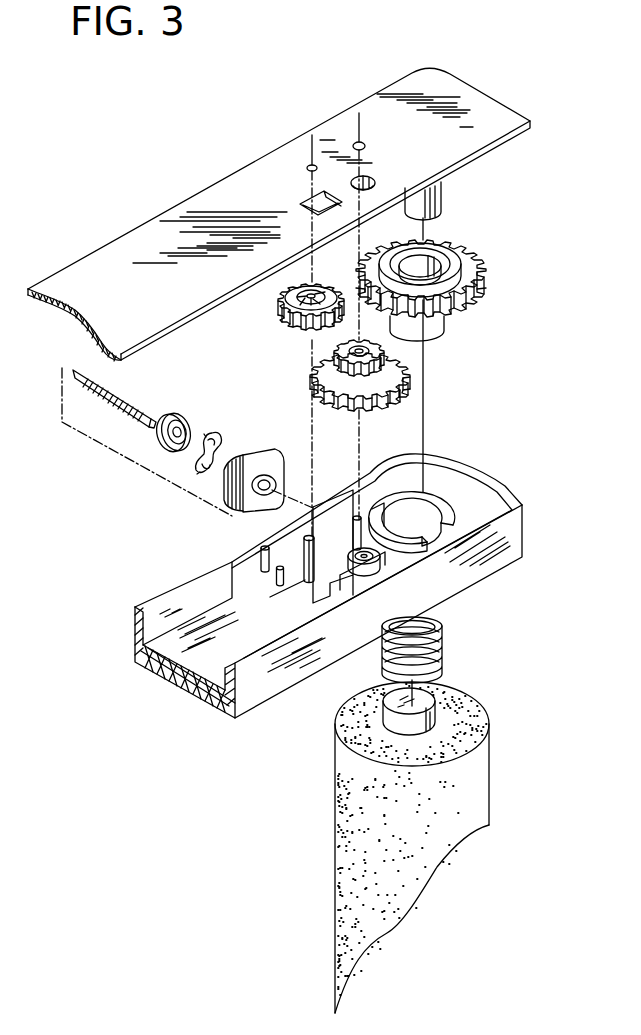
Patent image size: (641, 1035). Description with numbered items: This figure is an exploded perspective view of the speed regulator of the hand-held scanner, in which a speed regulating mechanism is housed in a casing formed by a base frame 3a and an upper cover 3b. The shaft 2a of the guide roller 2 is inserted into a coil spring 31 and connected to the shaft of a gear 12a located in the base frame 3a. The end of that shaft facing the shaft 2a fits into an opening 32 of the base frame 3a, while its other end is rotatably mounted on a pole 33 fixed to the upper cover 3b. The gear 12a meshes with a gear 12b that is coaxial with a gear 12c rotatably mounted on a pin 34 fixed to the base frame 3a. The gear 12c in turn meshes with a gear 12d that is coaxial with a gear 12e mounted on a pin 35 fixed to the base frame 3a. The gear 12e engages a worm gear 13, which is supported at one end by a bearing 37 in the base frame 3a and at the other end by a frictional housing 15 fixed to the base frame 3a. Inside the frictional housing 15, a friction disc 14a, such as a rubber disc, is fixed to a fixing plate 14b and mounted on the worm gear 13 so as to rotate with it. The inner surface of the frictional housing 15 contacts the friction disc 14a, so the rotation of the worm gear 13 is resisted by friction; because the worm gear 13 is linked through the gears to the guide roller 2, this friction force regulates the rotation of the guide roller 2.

The guide roller 2 is at (488, 763).
The shaft 2a is at (433, 700).
The base frame 3a is at (523, 527).
The upper cover 3b is at (500, 103).
The gear 12a is at (488, 284).
The gear 12b is at (386, 356).
The gear 12c is at (410, 385).
The gear 12d is at (293, 340).
The gear 12e is at (277, 307).
The worm gear 13 is at (100, 398).
The friction disc 14a is at (197, 465).
The fixing plate 14b is at (155, 440).
The frictional housing 15 is at (233, 493).
The coil spring 31 is at (442, 643).
The opening 32 is at (430, 493).
The pole 33 is at (443, 200).
The pin 34 is at (380, 560).
The pin 35 is at (187, 673).
The bearing 37 is at (260, 550).